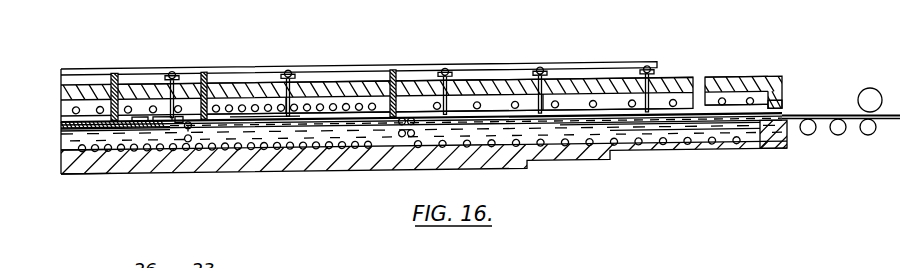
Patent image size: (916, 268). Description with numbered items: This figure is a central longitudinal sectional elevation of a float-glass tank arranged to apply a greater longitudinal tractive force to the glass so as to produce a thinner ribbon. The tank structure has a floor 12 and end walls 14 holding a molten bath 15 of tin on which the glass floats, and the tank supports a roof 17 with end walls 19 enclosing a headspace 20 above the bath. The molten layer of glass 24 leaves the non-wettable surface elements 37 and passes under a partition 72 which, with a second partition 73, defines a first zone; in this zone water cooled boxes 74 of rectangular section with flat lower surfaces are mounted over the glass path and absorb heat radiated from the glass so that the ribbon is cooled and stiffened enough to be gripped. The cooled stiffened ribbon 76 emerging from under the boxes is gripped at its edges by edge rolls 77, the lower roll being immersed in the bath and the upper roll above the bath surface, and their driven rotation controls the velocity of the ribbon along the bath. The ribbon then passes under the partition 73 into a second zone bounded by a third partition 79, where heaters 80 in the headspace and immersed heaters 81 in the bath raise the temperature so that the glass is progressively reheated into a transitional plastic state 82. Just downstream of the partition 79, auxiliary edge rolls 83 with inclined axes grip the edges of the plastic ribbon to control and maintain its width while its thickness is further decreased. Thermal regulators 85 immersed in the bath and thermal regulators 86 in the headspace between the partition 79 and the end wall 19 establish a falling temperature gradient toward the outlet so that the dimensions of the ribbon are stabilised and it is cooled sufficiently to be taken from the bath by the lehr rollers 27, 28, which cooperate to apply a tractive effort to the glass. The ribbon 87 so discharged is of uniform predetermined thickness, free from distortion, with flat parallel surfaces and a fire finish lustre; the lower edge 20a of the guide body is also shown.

The floor 12 is at (91, 155).
The end walls 14 is at (785, 146).
The molten bath 15 is at (678, 127).
The roof 17 is at (562, 89).
The end walls of roof structure 19 is at (781, 104).
The headspace 20 is at (488, 106).
The guide body lower edge 20a is at (543, 108).
The layer of glass 24 is at (61, 131).
The driven rolls 27 is at (864, 131).
The superimposed driven rolls 28 is at (872, 88).
The non-wettable surface elements 37 is at (61, 125).
The partition 72 is at (114, 80).
The second partition 73 is at (206, 80).
The water cooled boxes 74 is at (159, 123).
The cooled stiffened ribbon of glass 76 is at (178, 125).
The edge rolls 77 is at (189, 139).
The third partition 79 is at (392, 80).
The heaters 80 is at (336, 100).
The heaters 81 is at (364, 144).
The plastic glass 82 is at (270, 116).
The auxiliary edge rolls 83 is at (407, 134).
The thermal regulators 85 is at (735, 140).
The thermal regulators 86 is at (725, 92).
The ribbon 87 is at (632, 118).